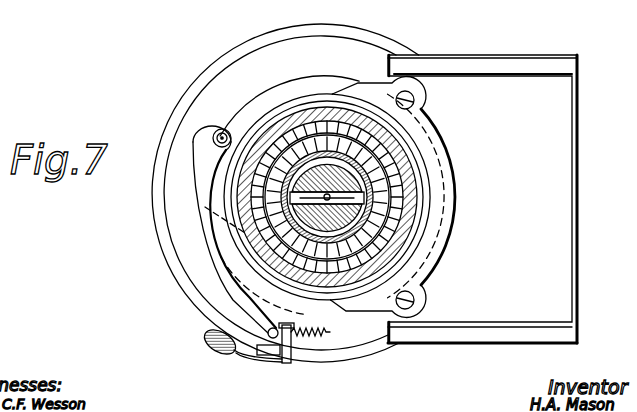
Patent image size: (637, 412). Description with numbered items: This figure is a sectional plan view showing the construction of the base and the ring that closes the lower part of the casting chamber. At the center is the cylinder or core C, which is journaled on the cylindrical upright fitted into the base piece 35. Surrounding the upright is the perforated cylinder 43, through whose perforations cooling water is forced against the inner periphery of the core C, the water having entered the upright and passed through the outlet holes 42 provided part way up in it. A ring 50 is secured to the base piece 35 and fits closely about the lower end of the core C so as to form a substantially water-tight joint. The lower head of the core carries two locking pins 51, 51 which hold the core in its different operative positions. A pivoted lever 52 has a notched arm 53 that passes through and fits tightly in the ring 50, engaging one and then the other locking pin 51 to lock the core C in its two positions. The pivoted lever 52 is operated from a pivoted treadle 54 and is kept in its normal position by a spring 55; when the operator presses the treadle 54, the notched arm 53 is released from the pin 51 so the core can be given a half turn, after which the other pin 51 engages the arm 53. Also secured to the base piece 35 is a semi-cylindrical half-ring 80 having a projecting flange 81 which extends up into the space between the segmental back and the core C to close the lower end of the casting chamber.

The base piece 35 is at (215, 63).
The ring 50 is at (290, 88).
The locking pins 51 is at (410, 145).
The pivoted lever 52 is at (187, 202).
The notched arm 53 is at (228, 222).
The pivoted treadle 54 is at (213, 348).
The spring 55 is at (322, 336).
The outlet holes 42 is at (283, 268).
The perforated cylinder 43 is at (421, 236).
The half-ring 80 is at (398, 260).
The projecting flange 81 is at (436, 283).
The cylinder or core C is at (430, 182).